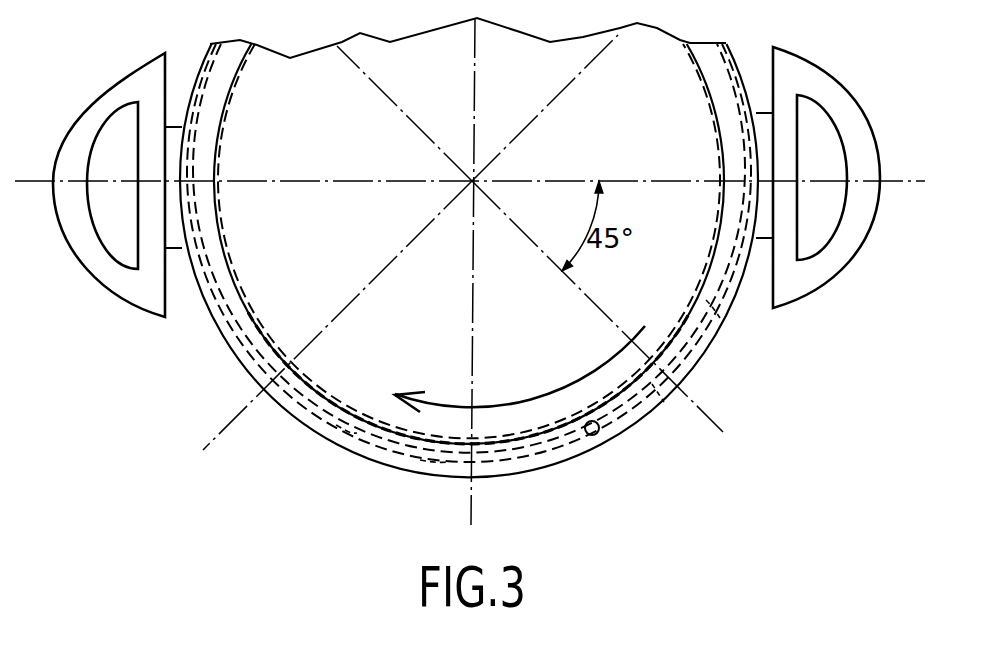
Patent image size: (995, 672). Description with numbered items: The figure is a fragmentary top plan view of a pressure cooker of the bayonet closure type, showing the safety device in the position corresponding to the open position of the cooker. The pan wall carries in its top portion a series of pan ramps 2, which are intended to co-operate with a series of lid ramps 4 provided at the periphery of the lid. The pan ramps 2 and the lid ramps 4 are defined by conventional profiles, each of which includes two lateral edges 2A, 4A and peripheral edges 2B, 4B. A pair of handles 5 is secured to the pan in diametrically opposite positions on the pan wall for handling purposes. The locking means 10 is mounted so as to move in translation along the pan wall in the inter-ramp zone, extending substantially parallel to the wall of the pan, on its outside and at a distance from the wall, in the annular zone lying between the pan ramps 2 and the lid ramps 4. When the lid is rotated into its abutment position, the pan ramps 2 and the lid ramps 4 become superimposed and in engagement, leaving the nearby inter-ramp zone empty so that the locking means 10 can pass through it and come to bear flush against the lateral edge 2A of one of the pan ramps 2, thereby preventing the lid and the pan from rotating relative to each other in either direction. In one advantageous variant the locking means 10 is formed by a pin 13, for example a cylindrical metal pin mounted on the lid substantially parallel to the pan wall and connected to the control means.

The pan ramps 2 is at (388, 445).
The lateral edge 2A is at (357, 433).
The peripheral edge 2B is at (437, 462).
The lid ramps 4 is at (252, 358).
The lateral edge 4A is at (713, 308).
The peripheral edge 4B is at (660, 395).
The handles 5 is at (104, 265).
The locking means 10 is at (607, 452).
The pin 13 is at (592, 436).